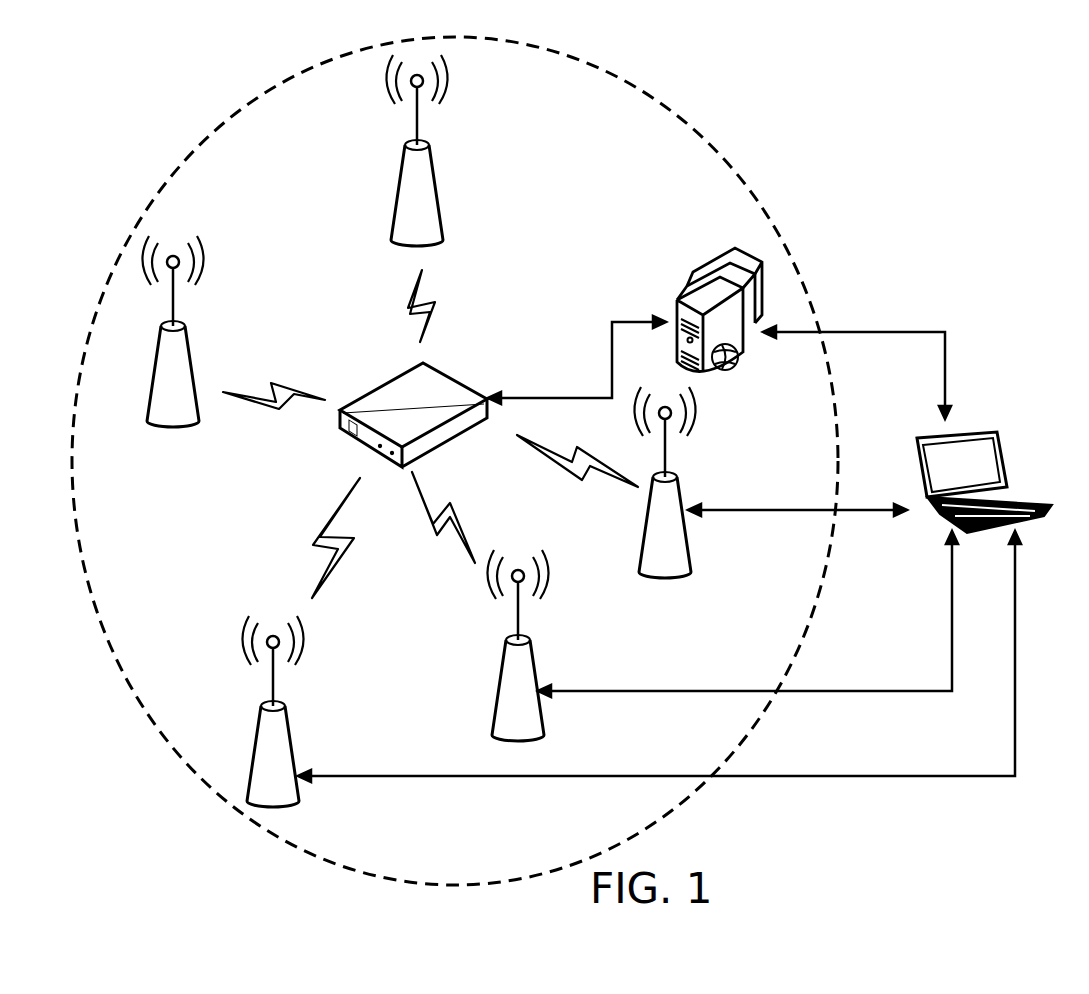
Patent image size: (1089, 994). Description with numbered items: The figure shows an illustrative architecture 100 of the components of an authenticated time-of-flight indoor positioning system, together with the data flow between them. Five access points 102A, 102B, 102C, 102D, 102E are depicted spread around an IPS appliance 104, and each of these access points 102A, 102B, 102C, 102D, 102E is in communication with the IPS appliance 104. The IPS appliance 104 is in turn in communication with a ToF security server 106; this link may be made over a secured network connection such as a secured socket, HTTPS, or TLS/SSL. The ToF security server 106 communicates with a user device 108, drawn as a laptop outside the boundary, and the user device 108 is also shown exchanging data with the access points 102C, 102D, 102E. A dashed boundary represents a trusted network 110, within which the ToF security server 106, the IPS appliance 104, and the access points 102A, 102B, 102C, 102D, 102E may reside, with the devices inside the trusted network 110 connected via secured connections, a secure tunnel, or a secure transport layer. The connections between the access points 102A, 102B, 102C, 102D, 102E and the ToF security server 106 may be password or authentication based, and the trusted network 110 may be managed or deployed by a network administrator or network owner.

The architecture 100 is at (980, 91).
The access point 102A is at (435, 168).
The access point 102B is at (190, 345).
The access point 102C is at (283, 708).
The access point 102D is at (528, 641).
The access point 102E is at (677, 480).
The IPS appliance 104 is at (455, 375).
The ToF security server 106 is at (695, 276).
The user device 108 is at (970, 430).
The trusted network 110 is at (705, 137).